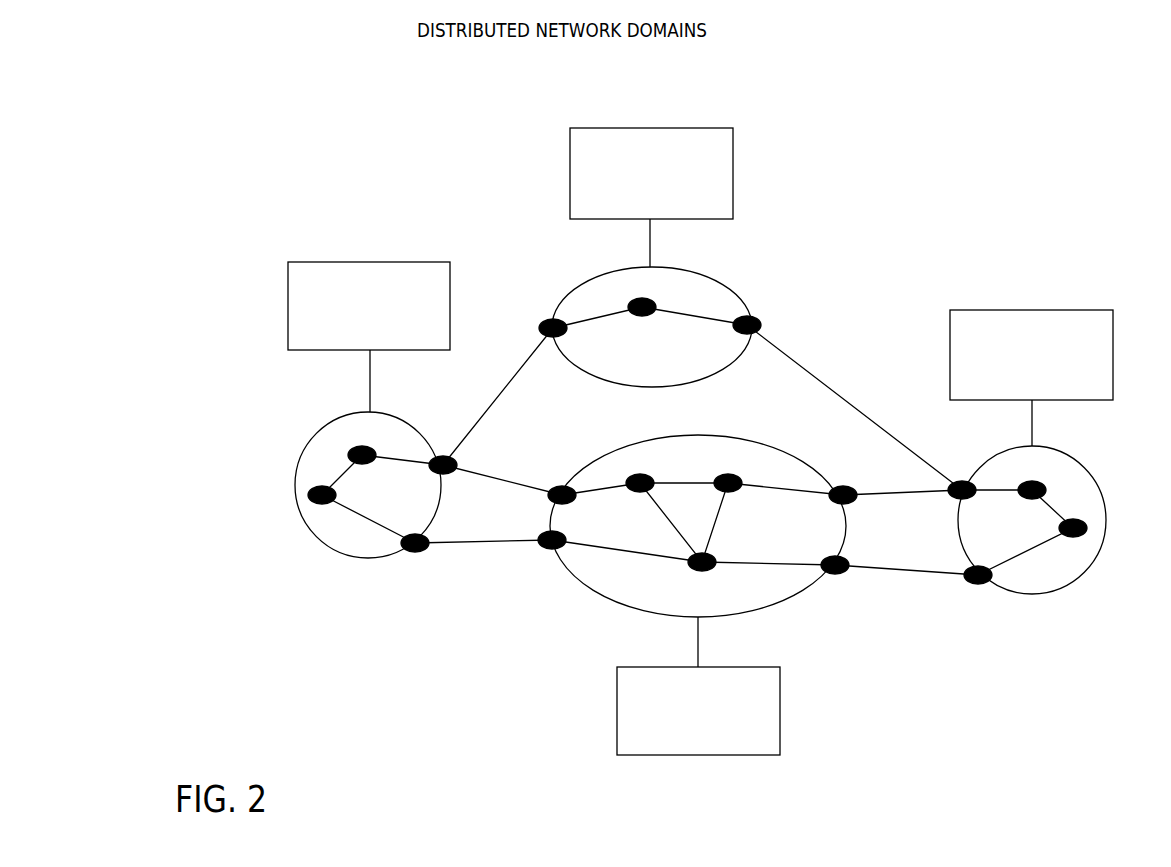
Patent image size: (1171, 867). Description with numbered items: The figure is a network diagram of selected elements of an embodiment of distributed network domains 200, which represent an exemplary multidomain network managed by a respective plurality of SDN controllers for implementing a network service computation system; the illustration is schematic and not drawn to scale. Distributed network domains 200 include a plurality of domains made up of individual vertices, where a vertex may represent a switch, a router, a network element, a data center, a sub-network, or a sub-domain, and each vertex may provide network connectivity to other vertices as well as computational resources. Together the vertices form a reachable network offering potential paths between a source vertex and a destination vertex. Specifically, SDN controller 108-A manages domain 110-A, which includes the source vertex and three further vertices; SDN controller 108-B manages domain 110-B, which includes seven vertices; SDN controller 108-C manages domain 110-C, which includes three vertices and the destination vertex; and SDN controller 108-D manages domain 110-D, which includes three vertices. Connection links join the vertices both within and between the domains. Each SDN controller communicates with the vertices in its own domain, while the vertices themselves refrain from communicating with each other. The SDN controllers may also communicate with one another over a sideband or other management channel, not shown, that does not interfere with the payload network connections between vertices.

The distributed network domains 200 is at (291, 35).
The SDN controller 108-A is at (394, 341).
The SDN controller 108-B is at (722, 746).
The SDN controller 108-C is at (1056, 390).
The SDN controller 108-D is at (675, 210).
The domain 110-A is at (323, 429).
The domain 110-B is at (673, 436).
The domain 110-C is at (1093, 471).
The domain 110-D is at (617, 268).